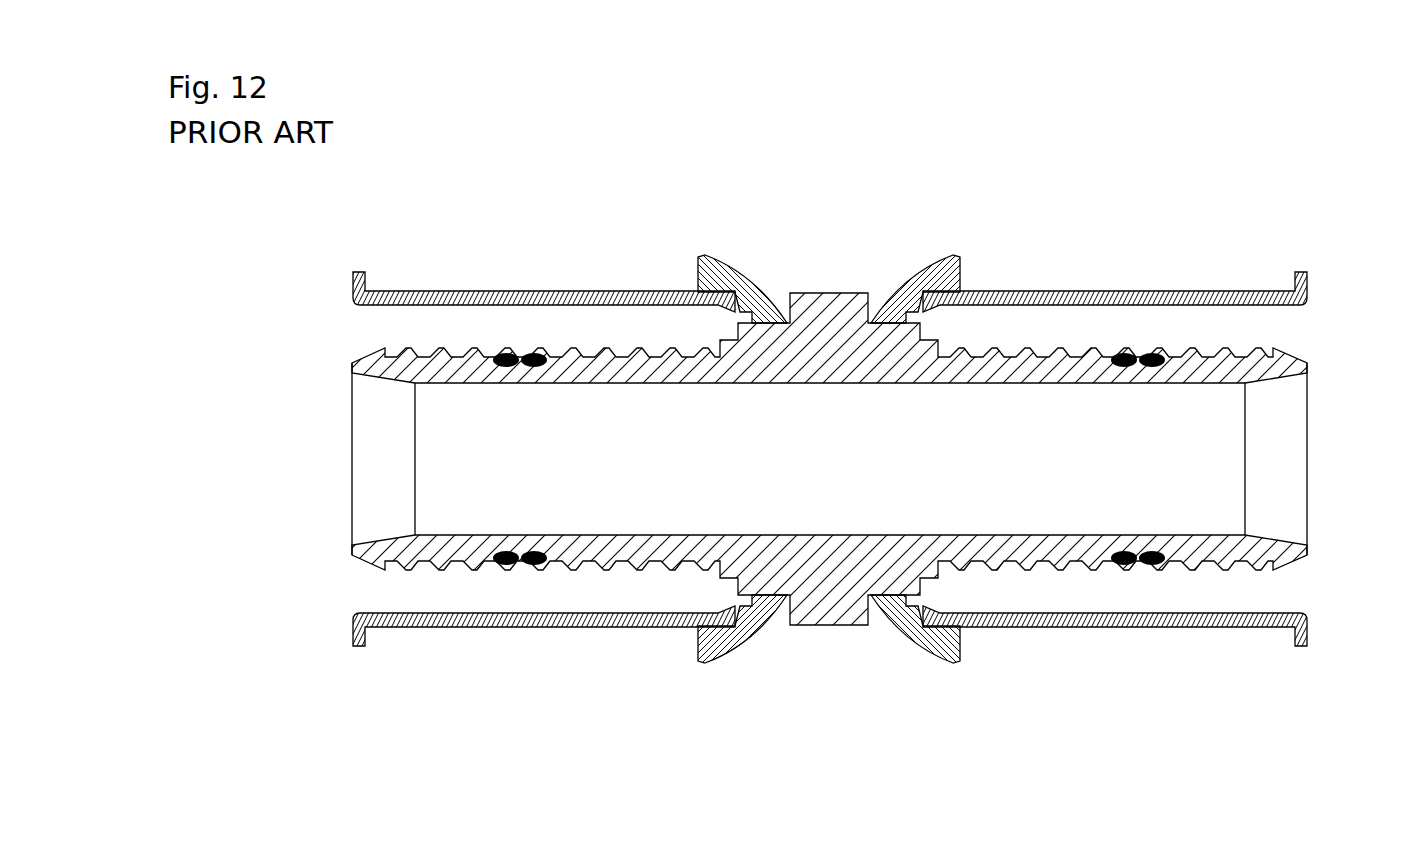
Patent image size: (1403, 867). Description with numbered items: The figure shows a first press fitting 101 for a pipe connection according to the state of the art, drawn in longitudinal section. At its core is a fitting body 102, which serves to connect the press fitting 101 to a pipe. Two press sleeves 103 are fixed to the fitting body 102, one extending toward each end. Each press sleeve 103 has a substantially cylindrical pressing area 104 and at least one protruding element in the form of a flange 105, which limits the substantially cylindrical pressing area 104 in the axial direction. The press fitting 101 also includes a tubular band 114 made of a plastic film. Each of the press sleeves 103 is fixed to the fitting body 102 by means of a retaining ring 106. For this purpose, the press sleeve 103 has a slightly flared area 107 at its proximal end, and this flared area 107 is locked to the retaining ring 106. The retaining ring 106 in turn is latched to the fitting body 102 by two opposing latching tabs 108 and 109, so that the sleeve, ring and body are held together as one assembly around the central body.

The press fitting 101 is at (1254, 101).
The fitting body 102 is at (358, 356).
The press sleeve 103 is at (603, 628).
The pressing area 104 is at (1297, 666).
The flange 105 is at (1312, 280).
The retaining ring 106 is at (737, 656).
The flared area 107 is at (921, 266).
The latching tab 108 is at (889, 630).
The latching tab 109 is at (932, 532).
The tubular band 114 is at (1113, 281).